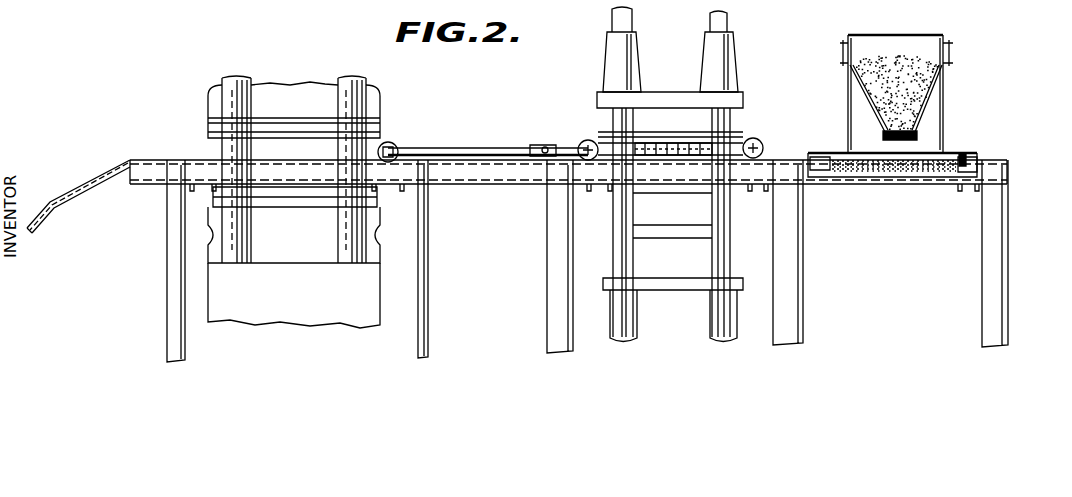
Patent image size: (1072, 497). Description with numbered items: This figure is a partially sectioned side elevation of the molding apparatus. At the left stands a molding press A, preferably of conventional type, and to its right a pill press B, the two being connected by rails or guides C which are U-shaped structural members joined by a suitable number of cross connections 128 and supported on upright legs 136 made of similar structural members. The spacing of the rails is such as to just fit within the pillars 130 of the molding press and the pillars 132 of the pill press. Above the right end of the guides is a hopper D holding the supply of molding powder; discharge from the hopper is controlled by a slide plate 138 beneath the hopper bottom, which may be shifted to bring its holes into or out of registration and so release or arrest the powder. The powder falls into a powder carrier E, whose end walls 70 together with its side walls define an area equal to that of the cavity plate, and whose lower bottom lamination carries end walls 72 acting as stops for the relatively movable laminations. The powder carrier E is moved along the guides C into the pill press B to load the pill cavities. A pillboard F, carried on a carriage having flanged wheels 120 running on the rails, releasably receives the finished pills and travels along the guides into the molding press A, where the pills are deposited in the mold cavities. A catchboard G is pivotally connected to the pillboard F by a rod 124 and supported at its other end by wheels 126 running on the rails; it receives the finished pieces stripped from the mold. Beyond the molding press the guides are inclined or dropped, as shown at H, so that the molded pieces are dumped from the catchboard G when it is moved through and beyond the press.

The molding press A is at (312, 184).
The pill press B is at (687, 174).
The rails or guides C is at (490, 183).
The hopper D is at (896, 80).
The powder carrier E is at (906, 160).
The pillboard F is at (673, 178).
The catchboard G is at (469, 149).
The inclined or dropped portion of guides H is at (47, 218).
The end walls 70 is at (963, 151).
The end walls on lower lamination 72 is at (818, 156).
The flanged wheels 120 is at (586, 141).
The rod 124 is at (543, 145).
The wheels 126 is at (390, 143).
The cross connections 128 is at (200, 186).
The pillars of the molding press 130 is at (352, 82).
The pillars of the pill press 132 is at (728, 18).
The upright legs 136 is at (175, 274).
The slide plate 138 is at (905, 137).